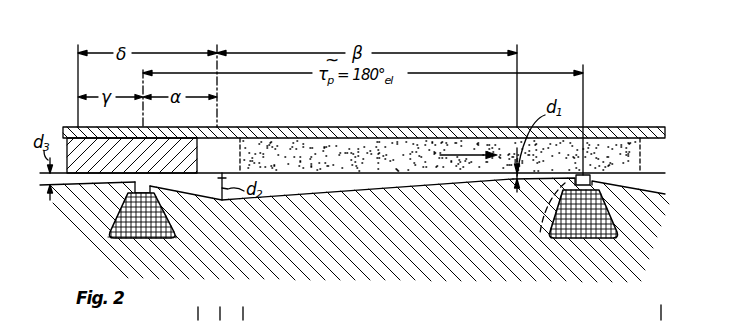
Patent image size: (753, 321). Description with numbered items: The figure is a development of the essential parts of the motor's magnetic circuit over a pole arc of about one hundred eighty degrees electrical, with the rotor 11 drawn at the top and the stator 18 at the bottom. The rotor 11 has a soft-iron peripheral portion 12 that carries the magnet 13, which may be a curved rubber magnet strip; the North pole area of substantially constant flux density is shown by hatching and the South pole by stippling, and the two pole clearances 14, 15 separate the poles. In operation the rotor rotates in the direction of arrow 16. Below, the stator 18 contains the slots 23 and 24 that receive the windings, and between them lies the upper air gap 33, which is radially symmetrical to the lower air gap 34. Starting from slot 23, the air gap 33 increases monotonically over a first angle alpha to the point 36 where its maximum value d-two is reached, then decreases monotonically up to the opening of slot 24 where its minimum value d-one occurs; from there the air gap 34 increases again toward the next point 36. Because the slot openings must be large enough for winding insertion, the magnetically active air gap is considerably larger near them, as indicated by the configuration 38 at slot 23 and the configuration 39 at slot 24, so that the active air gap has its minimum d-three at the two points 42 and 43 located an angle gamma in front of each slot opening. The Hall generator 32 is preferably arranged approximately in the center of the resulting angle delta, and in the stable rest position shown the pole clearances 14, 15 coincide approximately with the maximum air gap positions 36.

The rotor 11 is at (437, 124).
The peripheral portion 12 is at (330, 128).
The magnet 13 is at (381, 138).
The pole clearance 14 is at (232, 127).
The pole clearance 15 is at (643, 138).
The arrow 16 is at (472, 128).
The stator 18 is at (354, 230).
The slot 23 is at (165, 239).
The slot 24 is at (606, 240).
The Hall generator 32 is at (587, 173).
The upper air gap 33 is at (300, 188).
The lower air gap 34 is at (652, 194).
The point of maximum air gap 36 is at (226, 202).
The magnetically active air gap configuration at slot 23 38 is at (172, 200).
The magnetically active air gap configuration at slot 24 39 is at (540, 219).
The point of minimum active air gap 42 is at (76, 187).
The point of minimum active air gap 43 is at (515, 182).